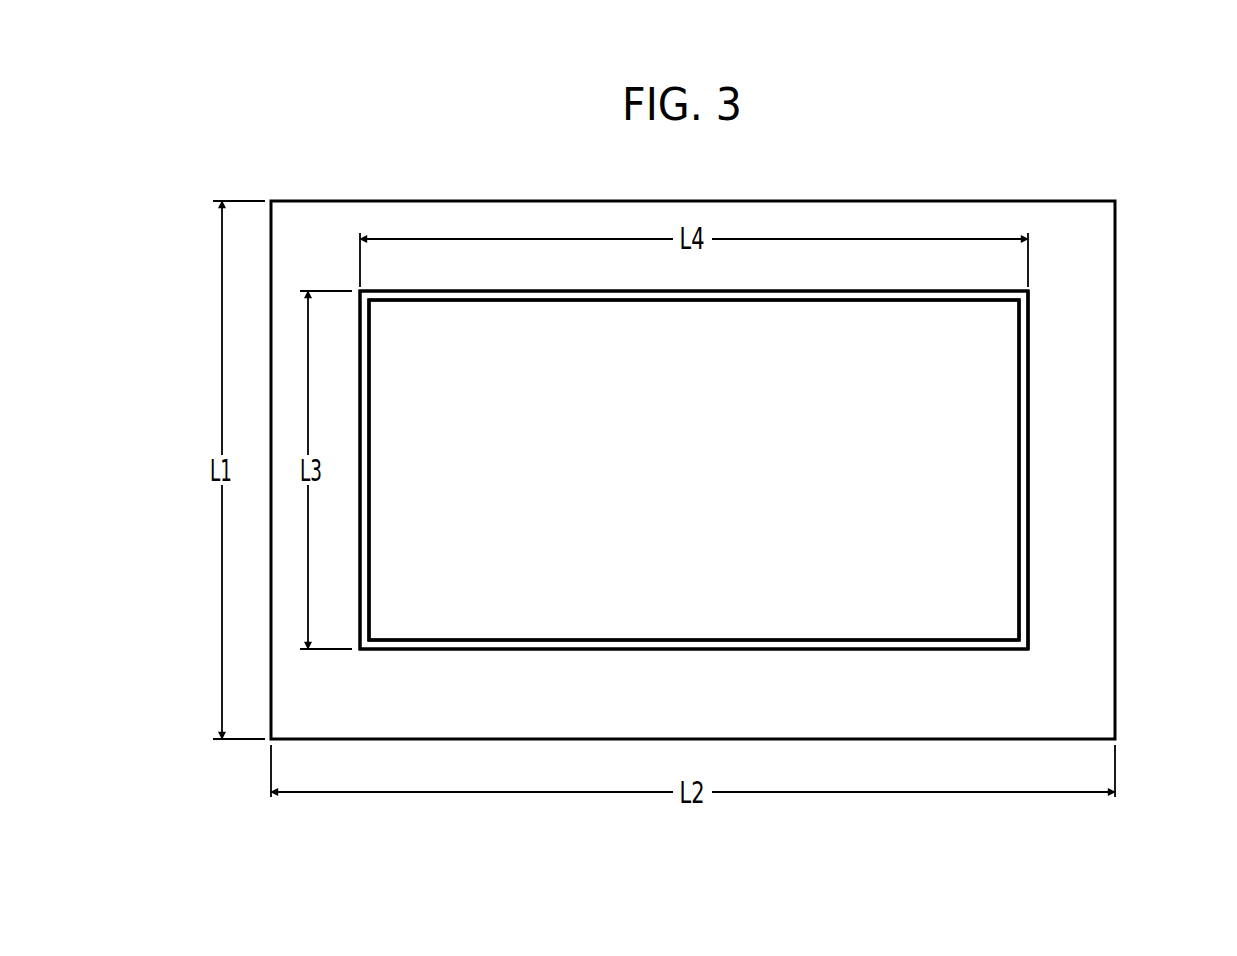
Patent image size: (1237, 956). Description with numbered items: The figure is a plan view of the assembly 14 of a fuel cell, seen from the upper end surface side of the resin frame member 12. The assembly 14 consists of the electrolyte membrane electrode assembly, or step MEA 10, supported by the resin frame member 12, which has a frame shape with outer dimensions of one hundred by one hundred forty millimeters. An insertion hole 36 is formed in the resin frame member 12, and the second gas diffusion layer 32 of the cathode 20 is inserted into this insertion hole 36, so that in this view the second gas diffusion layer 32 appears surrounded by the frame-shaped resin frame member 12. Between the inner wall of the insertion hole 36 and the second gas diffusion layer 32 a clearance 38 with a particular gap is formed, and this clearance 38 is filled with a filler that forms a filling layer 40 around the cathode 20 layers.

The assembly 14 is at (782, 164).
The resin frame member 12 is at (1094, 302).
The electrolyte membrane electrode assembly (step MEA) 10 is at (434, 616).
The filling layer 40 is at (771, 294).
The clearance 38 is at (873, 295).
The insertion hole 36 is at (1027, 497).
The second gas diffusion layer 32 is at (990, 410).
The cathode 20 is at (990, 410).